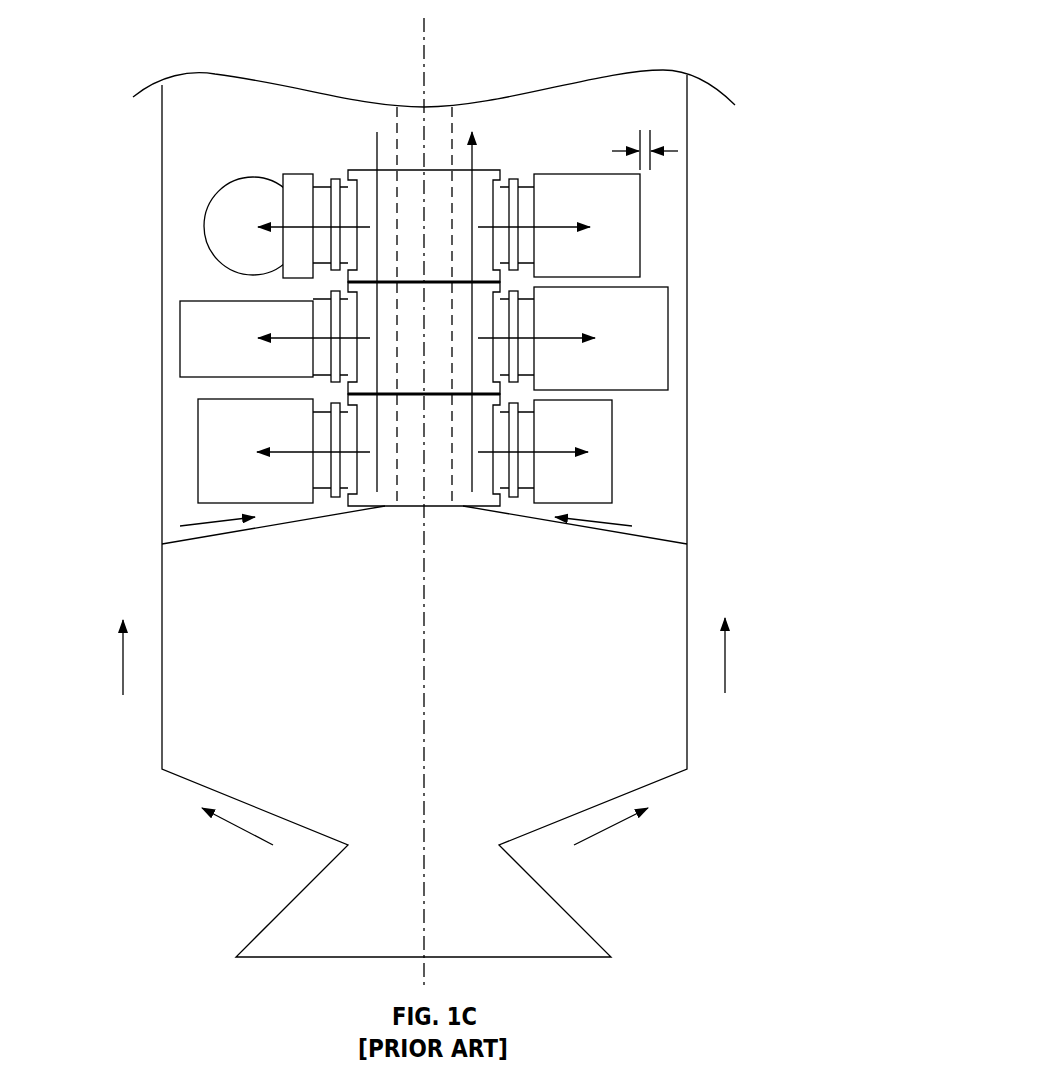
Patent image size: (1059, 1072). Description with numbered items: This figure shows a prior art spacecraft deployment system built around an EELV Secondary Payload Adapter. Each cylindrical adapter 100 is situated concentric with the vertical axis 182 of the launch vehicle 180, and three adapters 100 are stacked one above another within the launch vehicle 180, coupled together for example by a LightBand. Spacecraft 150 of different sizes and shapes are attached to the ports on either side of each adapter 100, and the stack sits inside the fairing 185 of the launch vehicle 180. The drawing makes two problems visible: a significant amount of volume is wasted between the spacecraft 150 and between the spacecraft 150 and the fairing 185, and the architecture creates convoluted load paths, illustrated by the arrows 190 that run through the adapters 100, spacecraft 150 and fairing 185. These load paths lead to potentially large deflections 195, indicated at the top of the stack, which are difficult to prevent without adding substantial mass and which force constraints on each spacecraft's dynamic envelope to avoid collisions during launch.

The adapter 100 is at (418, 437).
The spacecraft 150 is at (207, 225).
The launch vehicle 180 is at (763, 60).
The vertical axis 182 is at (425, 53).
The fairing 185 is at (162, 247).
The arrows 190 is at (472, 187).
The deflections 195 is at (650, 130).